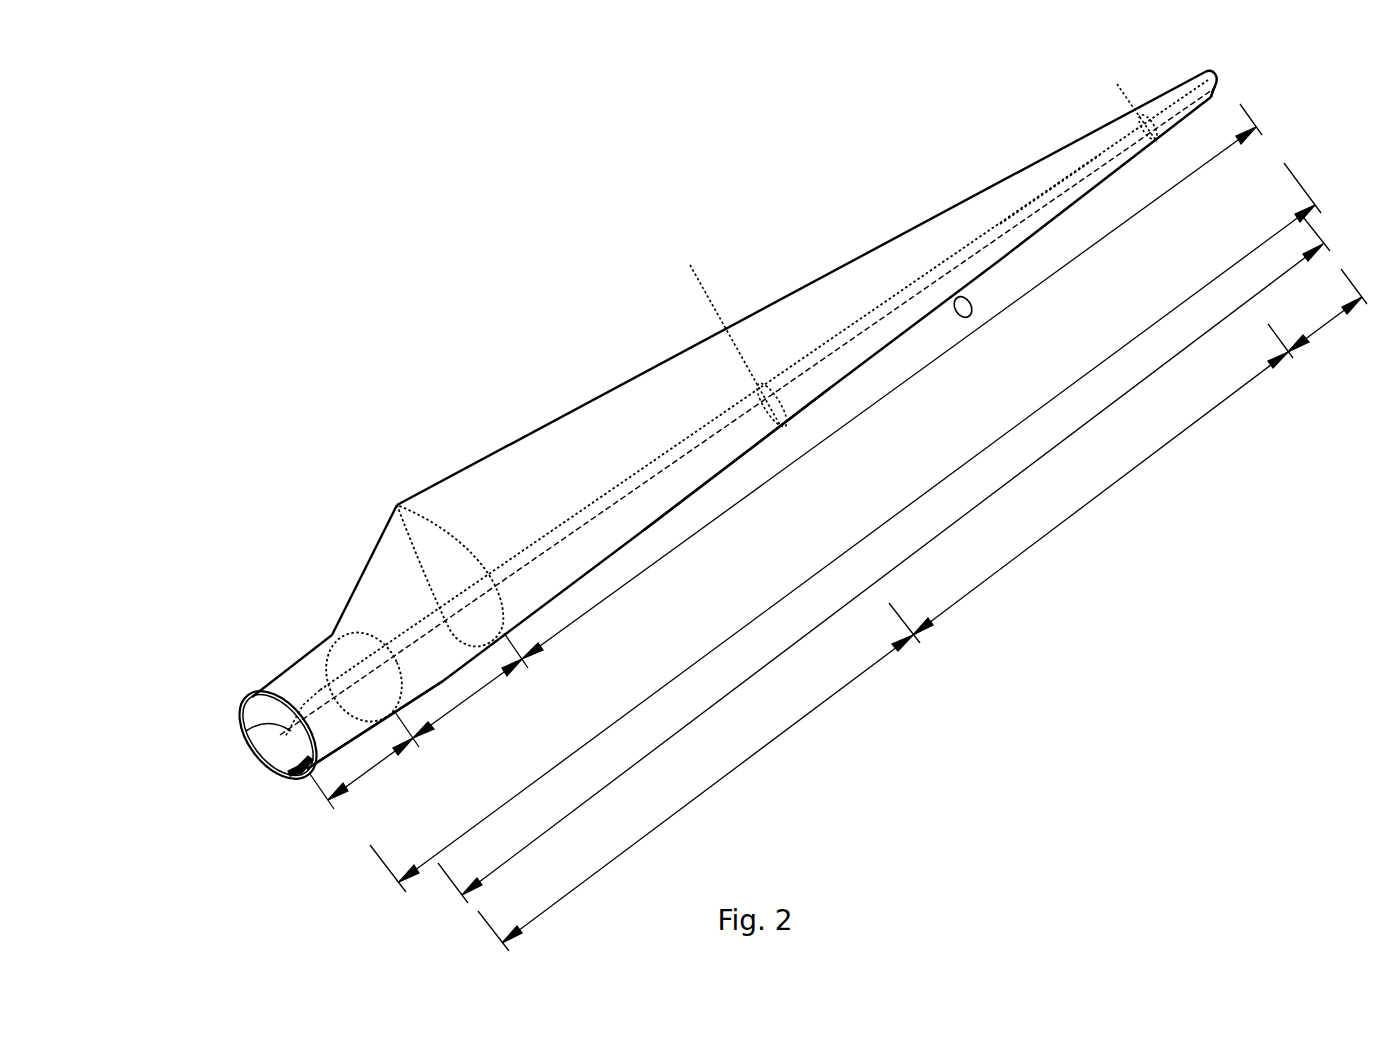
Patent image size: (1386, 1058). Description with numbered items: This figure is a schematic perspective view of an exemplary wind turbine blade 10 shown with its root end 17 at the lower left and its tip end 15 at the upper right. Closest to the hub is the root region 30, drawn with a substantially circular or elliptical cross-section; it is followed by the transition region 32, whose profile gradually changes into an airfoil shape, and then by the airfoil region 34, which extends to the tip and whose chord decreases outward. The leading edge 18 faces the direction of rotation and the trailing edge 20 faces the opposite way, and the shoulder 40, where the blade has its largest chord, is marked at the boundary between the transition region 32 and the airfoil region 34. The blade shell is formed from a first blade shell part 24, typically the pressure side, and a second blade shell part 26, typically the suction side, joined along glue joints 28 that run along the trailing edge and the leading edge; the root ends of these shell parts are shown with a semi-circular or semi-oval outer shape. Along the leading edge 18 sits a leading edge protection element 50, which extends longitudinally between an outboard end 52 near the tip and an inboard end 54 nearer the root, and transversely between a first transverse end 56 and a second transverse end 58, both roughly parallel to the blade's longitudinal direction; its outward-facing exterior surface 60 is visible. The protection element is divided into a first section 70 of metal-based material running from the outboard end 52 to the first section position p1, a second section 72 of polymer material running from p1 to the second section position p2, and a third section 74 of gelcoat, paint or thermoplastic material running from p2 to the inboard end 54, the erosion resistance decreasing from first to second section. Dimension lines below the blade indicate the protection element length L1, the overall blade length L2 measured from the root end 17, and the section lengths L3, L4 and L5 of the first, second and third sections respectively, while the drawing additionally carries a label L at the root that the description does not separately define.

The wind turbine blade 10 is at (548, 255).
The tip end 15 is at (1215, 77).
The root end 17 is at (250, 696).
The leading edge 18 is at (553, 596).
The trailing edge 20 is at (533, 428).
The first blade shell part 24 is at (258, 704).
The second blade shell part 26 is at (267, 763).
The glue joints 28 is at (263, 710).
The root region 30 is at (388, 748).
The transition region 32 is at (470, 697).
The airfoil region 34 is at (814, 446).
The shoulder 40 is at (397, 505).
The leading edge protection element 50 is at (853, 345).
The outboard end 52 is at (1217, 83).
The inboard end 54 is at (322, 693).
The first transverse end 56 is at (943, 263).
The second transverse end 58 is at (938, 285).
The exterior surface 60 is at (690, 482).
The first section 70 is at (1172, 106).
The second section 72 is at (1043, 203).
The third section 74 is at (728, 438).
The blade length L is at (246, 723).
The length of the leading edge protection element L1 is at (884, 558).
The blade length L2 is at (845, 527).
The length of the first section L3 is at (1327, 310).
The length of the second section L4 is at (1103, 479).
The length of the third section L5 is at (699, 777).
The first section position p1 is at (1117, 86).
The second section position p2 is at (700, 268).